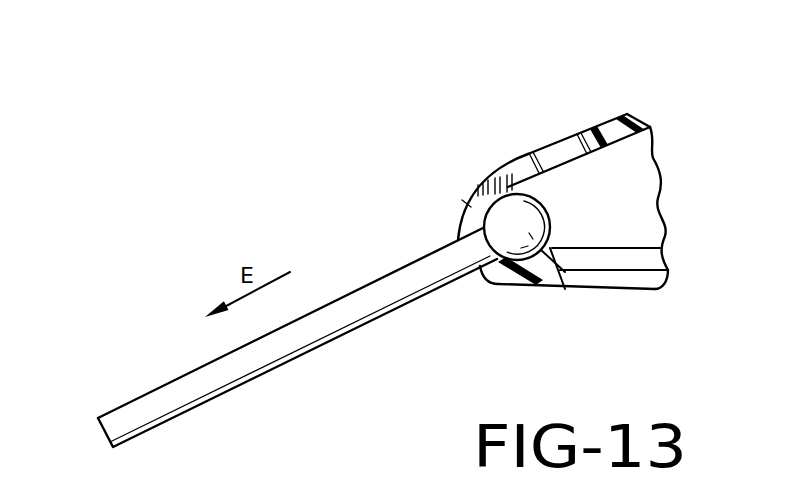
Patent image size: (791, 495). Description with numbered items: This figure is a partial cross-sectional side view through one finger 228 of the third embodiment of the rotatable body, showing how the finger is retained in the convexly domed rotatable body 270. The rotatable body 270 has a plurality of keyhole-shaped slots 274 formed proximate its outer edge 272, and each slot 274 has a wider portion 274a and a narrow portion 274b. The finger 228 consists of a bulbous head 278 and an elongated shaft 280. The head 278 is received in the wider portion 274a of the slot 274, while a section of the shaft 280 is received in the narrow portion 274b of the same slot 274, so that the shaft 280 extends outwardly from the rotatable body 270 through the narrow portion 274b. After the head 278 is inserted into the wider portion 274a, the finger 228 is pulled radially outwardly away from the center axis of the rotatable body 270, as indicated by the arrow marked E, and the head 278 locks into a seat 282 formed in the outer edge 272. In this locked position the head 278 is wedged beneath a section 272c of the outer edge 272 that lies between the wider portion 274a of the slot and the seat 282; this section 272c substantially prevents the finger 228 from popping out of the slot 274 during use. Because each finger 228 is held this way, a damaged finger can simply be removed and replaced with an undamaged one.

The rotatable body 270 is at (607, 119).
The outer edge 272 is at (460, 224).
The section of outer edge 272c is at (508, 177).
The keyhole-shaped slot 274 is at (540, 152).
The wider portion of slot 274a is at (560, 152).
The narrow portion of slot 274b is at (478, 204).
The bulbous head 278 is at (527, 222).
The seat 282 is at (548, 272).
The elongated shaft 280 is at (135, 398).
The finger 228 is at (182, 377).